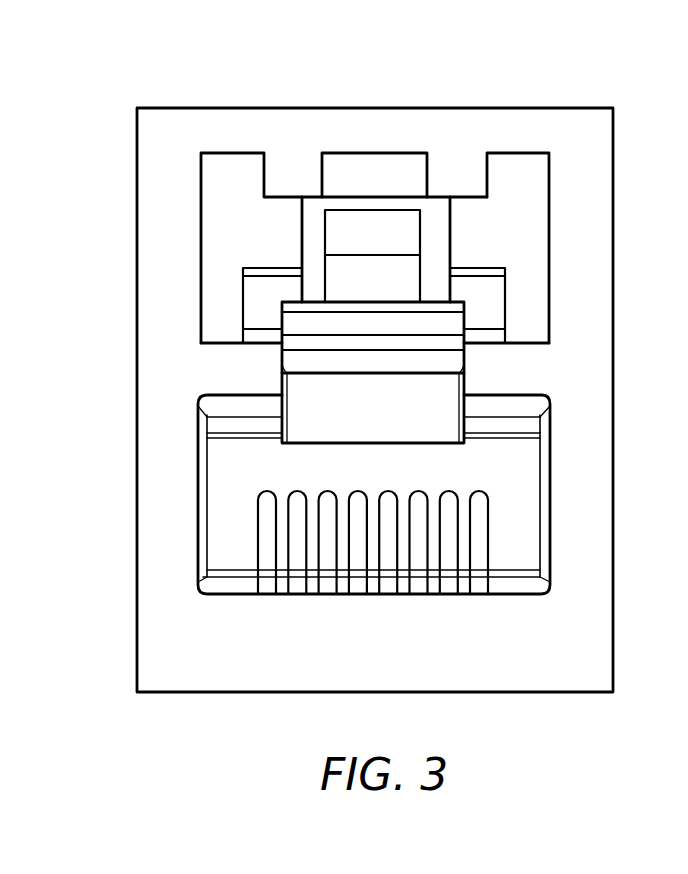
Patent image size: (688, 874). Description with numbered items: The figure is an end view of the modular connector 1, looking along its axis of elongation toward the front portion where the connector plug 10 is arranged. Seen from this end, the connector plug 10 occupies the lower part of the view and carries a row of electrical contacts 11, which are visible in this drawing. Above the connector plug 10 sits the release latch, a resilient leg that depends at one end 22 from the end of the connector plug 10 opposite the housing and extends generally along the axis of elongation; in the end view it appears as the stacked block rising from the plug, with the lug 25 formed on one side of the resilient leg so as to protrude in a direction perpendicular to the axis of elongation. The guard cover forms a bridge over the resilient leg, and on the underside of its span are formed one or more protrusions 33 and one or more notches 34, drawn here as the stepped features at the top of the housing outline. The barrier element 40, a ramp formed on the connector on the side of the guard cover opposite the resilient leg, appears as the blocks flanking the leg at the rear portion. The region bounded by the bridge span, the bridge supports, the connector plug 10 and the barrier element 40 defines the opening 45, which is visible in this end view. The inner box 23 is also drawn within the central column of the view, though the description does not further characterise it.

The modular connector 1 is at (103, 72).
The connector plug 10 is at (329, 609).
The electrical contacts 11 is at (477, 535).
The end of the leg 22 is at (345, 432).
The inner box 23 is at (346, 267).
The lug 25 is at (346, 325).
The protrusions 33 is at (458, 173).
The notches 34 is at (372, 159).
The barrier element 40 is at (262, 298).
The opening 45 is at (230, 215).